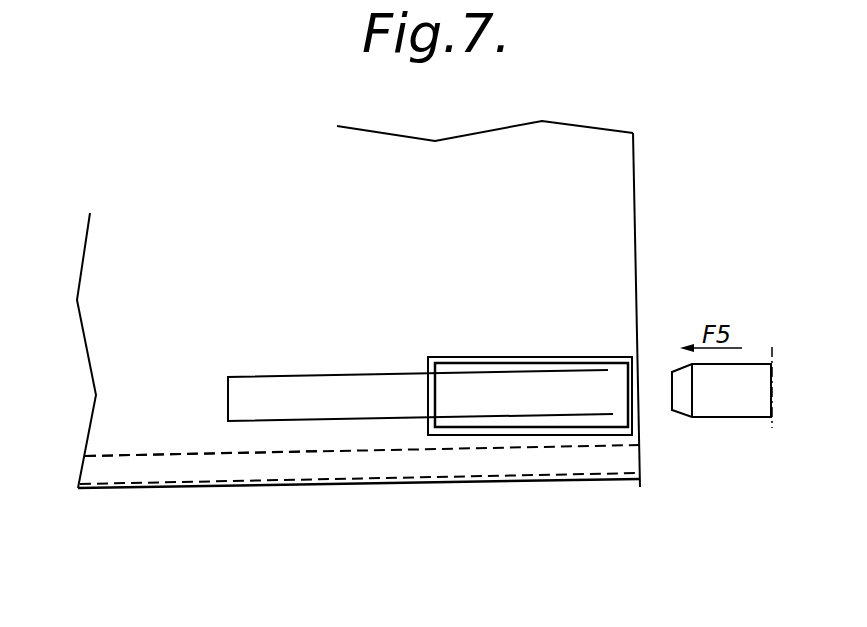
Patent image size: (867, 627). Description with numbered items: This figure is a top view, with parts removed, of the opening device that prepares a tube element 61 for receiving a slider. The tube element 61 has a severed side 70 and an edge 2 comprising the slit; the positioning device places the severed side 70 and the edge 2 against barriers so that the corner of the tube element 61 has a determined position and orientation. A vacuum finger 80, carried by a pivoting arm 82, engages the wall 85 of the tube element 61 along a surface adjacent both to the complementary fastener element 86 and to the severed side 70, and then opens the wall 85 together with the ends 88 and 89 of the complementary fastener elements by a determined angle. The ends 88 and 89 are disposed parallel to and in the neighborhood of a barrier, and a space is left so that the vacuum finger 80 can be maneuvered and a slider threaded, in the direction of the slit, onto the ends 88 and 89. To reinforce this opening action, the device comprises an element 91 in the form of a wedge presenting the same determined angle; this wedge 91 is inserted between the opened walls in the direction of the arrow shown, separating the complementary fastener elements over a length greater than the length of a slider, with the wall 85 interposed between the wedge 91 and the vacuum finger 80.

The edge 2 is at (356, 484).
The tube element 61 is at (338, 249).
The severed side 70 is at (636, 245).
The vacuum finger 80 is at (520, 368).
The pivoting arm 82 is at (298, 396).
The wall 85 is at (113, 251).
The complementary fastener element 86 is at (200, 466).
The end of fastener element 88 is at (640, 448).
The end of fastener element 89 is at (640, 472).
The wedge 91 is at (750, 402).